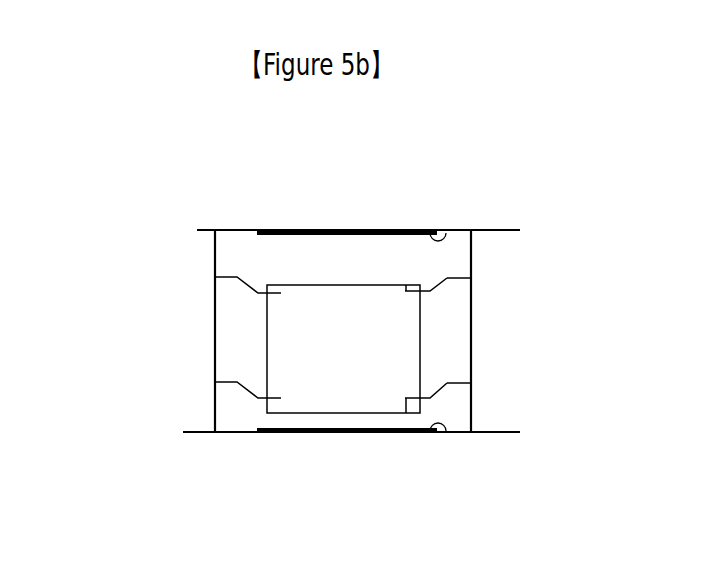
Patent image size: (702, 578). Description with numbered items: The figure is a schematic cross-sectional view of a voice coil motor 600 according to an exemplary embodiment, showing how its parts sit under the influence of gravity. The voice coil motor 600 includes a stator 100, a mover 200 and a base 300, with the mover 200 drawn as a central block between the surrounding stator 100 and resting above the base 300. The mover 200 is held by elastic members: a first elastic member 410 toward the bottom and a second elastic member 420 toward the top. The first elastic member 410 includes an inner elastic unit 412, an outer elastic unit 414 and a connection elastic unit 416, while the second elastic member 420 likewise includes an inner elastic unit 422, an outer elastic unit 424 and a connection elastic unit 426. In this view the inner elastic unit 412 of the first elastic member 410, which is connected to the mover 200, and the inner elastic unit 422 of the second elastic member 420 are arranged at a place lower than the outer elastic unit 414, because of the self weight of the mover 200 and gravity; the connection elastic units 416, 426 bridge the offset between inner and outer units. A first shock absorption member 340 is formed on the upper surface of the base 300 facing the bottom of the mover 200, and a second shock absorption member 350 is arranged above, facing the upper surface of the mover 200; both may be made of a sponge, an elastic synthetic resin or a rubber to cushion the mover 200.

The stator 100 is at (208, 309).
The mover 200 is at (350, 405).
The base 300 is at (238, 433).
The first shock absorption member 340 is at (444, 436).
The second shock absorption member 350 is at (444, 228).
The first elastic member 410 is at (208, 361).
The inner elastic unit 412 is at (410, 402).
The outer elastic unit 414 is at (471, 379).
The connection elastic unit 416 is at (452, 390).
The second elastic member 420 is at (208, 259).
The inner elastic unit 422 is at (408, 283).
The outer elastic unit 424 is at (471, 272).
The connection elastic unit 426 is at (450, 285).
The voice coil motor 600 is at (294, 210).